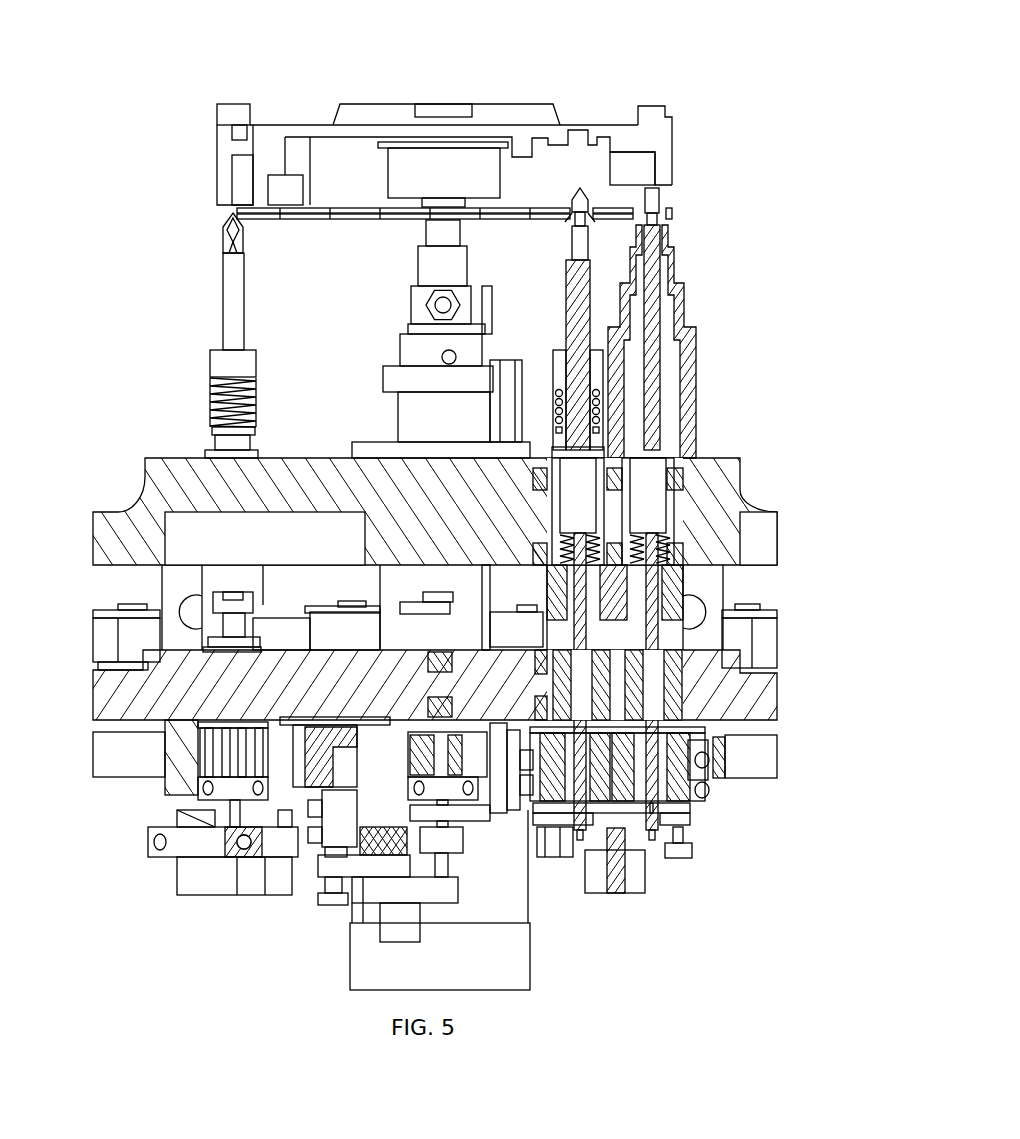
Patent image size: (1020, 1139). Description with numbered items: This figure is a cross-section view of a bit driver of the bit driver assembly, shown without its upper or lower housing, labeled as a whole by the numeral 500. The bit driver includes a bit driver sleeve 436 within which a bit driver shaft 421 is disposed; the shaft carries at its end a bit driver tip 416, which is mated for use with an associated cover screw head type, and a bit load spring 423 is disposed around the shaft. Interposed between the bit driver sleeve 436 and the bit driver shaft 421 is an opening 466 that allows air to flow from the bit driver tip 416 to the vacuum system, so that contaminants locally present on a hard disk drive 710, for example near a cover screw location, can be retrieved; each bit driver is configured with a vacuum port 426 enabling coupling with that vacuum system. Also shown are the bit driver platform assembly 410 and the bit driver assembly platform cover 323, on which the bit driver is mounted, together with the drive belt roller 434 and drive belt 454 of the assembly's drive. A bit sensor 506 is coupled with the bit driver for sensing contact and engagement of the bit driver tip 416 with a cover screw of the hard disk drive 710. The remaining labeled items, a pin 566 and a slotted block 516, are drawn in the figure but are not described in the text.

The probe assembly 500 is at (48, 17).
The bit driver sleeve 436 is at (439, 262).
The vacuum port 426 is at (427, 305).
The hard disk drive 710 is at (645, 155).
The bit driver tip 416 is at (226, 230).
The bit driver shaft 421 is at (232, 285).
The bit load spring 423 is at (235, 400).
The pin 566 is at (668, 212).
The opening 466 is at (652, 458).
The bit driver assembly platform cover 323 is at (723, 502).
The drive belt 454 is at (107, 650).
The drive belt roller 434 is at (100, 670).
The bit driver platform assembly 410 is at (750, 693).
The slotted block 516 is at (235, 757).
The bit sensor 506 is at (457, 888).